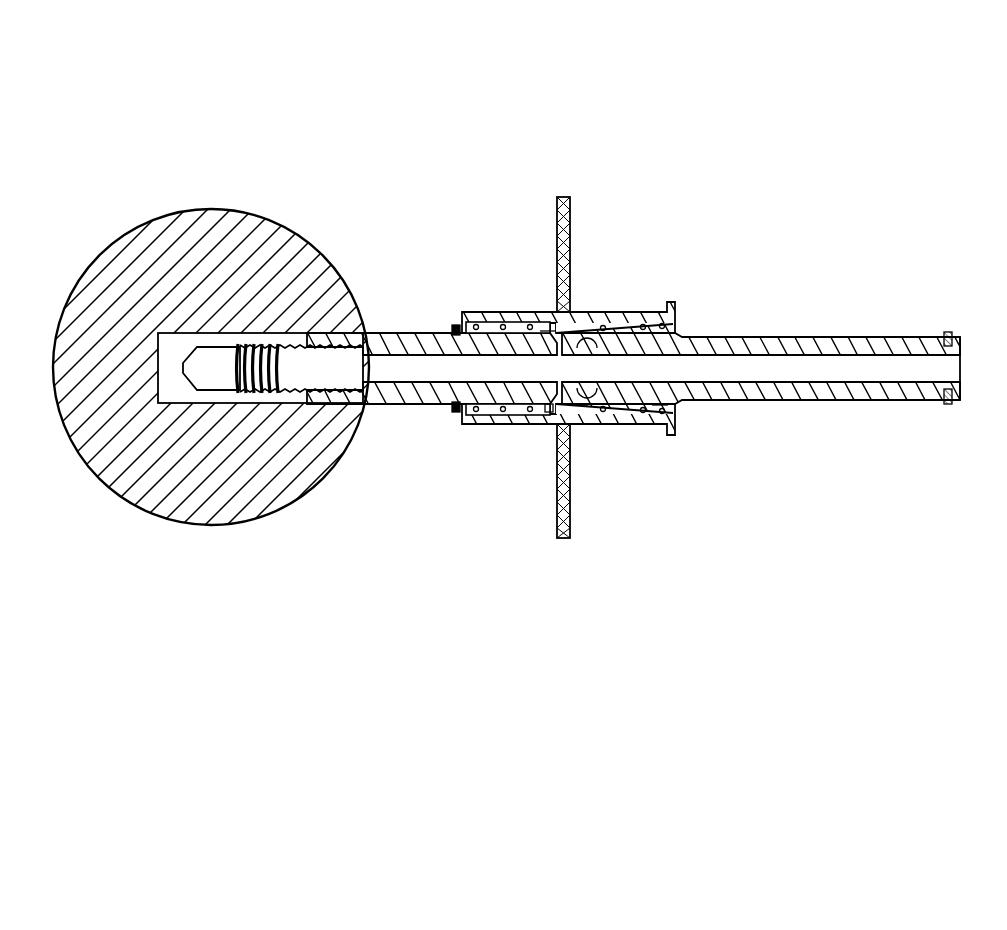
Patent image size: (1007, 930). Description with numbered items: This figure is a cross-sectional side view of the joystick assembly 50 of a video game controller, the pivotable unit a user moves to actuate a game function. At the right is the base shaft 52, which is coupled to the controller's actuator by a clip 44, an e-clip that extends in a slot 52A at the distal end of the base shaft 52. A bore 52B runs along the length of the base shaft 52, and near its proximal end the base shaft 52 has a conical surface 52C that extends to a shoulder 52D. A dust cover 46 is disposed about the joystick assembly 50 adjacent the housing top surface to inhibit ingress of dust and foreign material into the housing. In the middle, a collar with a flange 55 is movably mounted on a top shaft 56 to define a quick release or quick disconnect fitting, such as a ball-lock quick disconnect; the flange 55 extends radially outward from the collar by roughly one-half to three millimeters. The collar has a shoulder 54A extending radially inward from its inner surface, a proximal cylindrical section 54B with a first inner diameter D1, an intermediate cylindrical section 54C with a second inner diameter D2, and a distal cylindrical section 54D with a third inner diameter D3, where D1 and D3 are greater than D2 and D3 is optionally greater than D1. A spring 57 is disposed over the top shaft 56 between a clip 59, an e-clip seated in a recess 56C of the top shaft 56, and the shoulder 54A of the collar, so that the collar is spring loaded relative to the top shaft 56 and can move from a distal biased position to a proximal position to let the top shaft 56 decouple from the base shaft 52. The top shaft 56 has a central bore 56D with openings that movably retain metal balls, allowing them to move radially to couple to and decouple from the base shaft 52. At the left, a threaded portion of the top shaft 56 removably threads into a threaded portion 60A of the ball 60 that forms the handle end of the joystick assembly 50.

The joystick assembly 50 is at (866, 74).
The clip 44 is at (948, 330).
The dust cover 46 is at (570, 210).
The base shaft 52 is at (846, 330).
The slot 52A is at (944, 402).
The bore 52B is at (850, 396).
The conical surface 52C is at (700, 340).
The shoulder 52D is at (690, 402).
The shoulder 54A is at (548, 416).
The proximal cylindrical section 54B is at (497, 418).
The intermediate cylindrical section 54C is at (594, 326).
The distal cylindrical section 54D is at (645, 327).
The flange 55 is at (676, 295).
The top shaft 56 is at (435, 165).
The recess 56C is at (436, 412).
The central bore 56D is at (386, 345).
The spring 57 is at (486, 322).
The clip 59 is at (455, 324).
The ball 60 is at (84, 270).
The threaded portion 60A is at (205, 345).
The first inner diameter D1 is at (546, 326).
The second inner diameter D2 is at (578, 416).
The third inner diameter D3 is at (660, 412).